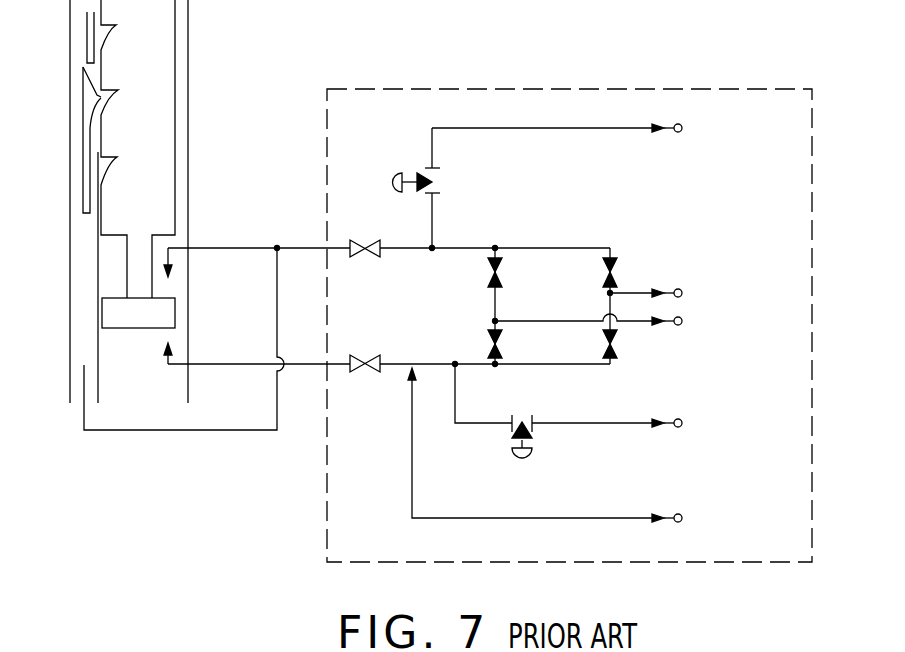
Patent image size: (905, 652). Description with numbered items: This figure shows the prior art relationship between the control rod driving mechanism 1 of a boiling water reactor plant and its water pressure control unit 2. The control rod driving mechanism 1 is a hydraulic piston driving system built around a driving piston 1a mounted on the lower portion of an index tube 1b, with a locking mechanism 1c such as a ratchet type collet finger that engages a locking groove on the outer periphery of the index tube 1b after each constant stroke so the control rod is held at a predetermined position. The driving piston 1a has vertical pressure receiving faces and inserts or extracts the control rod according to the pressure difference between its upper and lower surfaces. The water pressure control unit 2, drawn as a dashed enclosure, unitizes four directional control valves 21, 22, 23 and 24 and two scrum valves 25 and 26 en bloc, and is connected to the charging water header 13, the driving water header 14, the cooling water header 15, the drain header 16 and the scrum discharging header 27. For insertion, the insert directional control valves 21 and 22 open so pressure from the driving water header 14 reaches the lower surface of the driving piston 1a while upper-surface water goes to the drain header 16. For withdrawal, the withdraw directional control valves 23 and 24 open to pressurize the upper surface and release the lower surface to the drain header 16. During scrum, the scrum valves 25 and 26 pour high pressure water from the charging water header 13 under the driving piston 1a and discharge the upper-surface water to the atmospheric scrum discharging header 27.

The control rod driving mechanism 1 is at (190, 203).
The driving piston 1a is at (107, 310).
The index tube 1b is at (163, 58).
The locking mechanism 1c is at (87, 103).
The water pressure control unit 2 is at (570, 87).
The charging water header 13 is at (683, 423).
The driving water header 14 is at (683, 322).
The cooling water header 15 is at (683, 518).
The drain header 16 is at (683, 293).
The insert directional control valve 21 is at (603, 265).
The insert directional control valve 22 is at (488, 335).
The withdraw directional control valve 23 is at (603, 335).
The withdraw directional control valve 24 is at (488, 265).
The scrum valve 25 is at (522, 420).
The scrum valve 26 is at (434, 181).
The scrum discharging header 27 is at (682, 130).